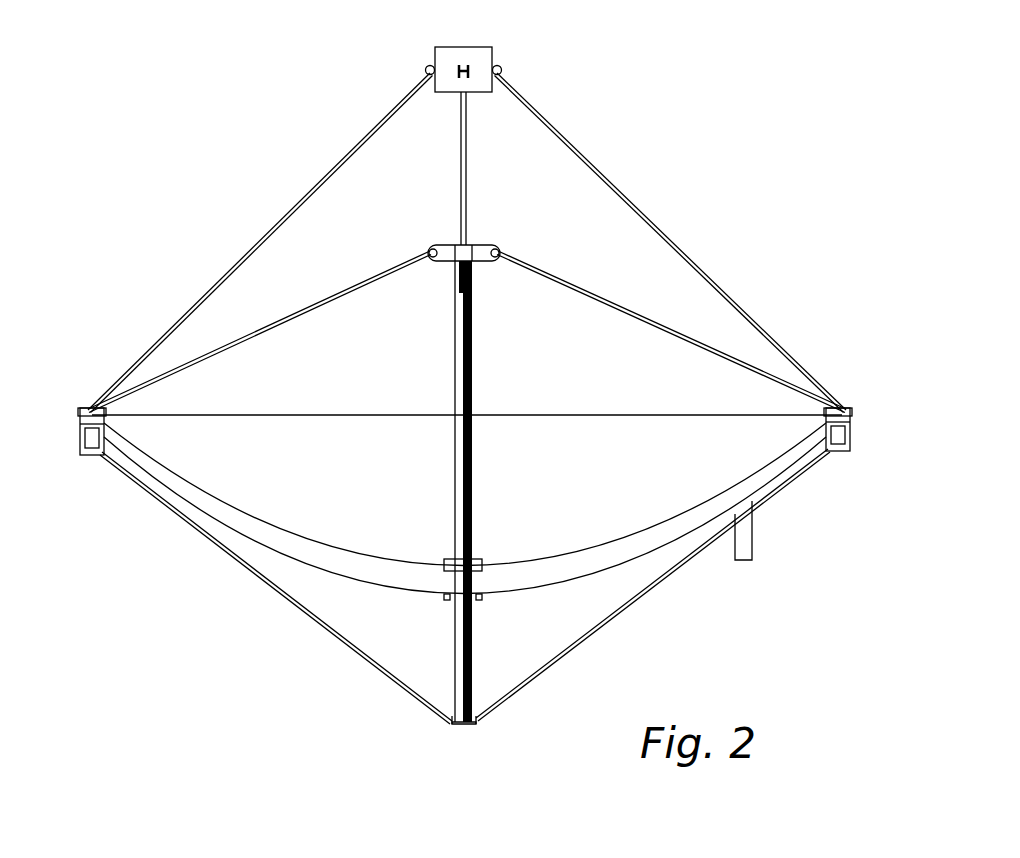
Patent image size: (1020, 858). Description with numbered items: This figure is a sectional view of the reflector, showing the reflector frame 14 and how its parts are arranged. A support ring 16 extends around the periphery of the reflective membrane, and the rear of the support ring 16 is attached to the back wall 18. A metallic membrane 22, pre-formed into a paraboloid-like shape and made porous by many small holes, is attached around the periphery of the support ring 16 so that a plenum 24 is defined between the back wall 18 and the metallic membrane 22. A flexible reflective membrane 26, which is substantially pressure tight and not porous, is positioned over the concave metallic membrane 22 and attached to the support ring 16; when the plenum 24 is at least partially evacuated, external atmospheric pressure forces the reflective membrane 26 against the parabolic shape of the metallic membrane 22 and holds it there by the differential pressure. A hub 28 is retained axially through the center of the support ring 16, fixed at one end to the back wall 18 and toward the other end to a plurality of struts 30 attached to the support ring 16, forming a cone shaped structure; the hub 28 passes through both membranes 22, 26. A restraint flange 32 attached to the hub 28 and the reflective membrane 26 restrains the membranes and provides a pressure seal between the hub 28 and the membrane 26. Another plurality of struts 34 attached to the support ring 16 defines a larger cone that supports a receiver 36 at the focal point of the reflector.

The reflector frame 14 is at (835, 384).
The support ring 16 is at (852, 437).
The back wall 18 is at (627, 607).
The metallic membrane 22 is at (510, 597).
The plenum 24 is at (376, 618).
The flexible reflective membrane 26 is at (674, 512).
The hub 28 is at (455, 680).
The struts 30 is at (356, 283).
The restraint flange 32 is at (482, 558).
The struts 34 is at (378, 118).
The receiver 36 is at (488, 56).